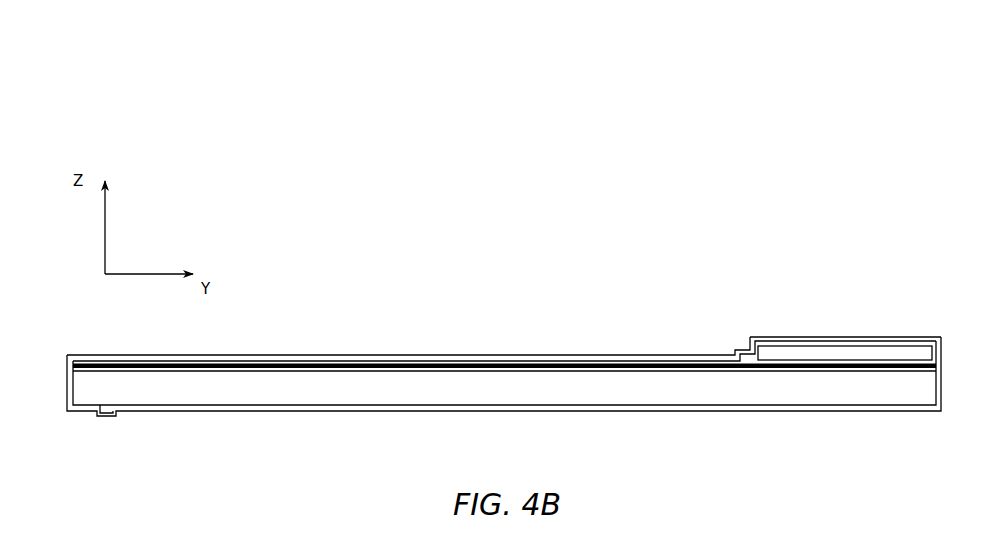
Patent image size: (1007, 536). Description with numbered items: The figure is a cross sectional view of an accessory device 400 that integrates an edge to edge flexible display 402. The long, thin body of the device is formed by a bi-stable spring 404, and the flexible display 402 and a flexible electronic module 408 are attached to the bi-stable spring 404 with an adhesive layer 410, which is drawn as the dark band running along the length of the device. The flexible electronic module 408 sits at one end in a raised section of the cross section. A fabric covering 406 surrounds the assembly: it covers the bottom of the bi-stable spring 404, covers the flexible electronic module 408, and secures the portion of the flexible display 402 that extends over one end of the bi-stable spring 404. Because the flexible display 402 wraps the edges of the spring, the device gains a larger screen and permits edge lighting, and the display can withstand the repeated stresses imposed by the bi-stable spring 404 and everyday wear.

The accessory device 400 is at (138, 99).
The flexible display 402 is at (301, 355).
The bi-stable spring 404 is at (504, 373).
The fabric covering 406 is at (725, 411).
The flexible electronic module 408 is at (792, 345).
The adhesive layer 410 is at (546, 363).